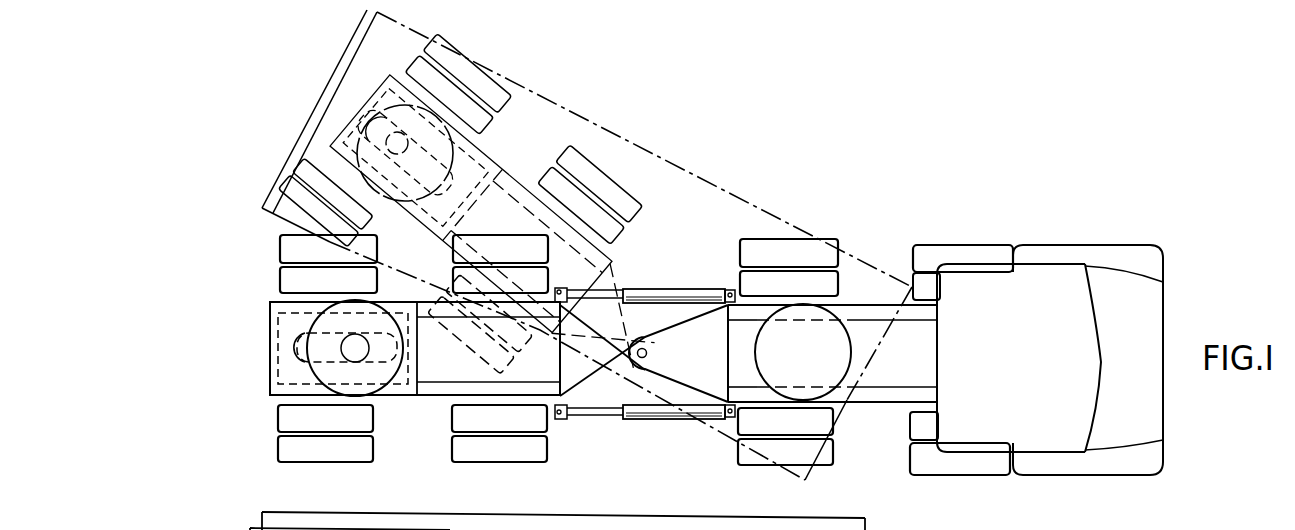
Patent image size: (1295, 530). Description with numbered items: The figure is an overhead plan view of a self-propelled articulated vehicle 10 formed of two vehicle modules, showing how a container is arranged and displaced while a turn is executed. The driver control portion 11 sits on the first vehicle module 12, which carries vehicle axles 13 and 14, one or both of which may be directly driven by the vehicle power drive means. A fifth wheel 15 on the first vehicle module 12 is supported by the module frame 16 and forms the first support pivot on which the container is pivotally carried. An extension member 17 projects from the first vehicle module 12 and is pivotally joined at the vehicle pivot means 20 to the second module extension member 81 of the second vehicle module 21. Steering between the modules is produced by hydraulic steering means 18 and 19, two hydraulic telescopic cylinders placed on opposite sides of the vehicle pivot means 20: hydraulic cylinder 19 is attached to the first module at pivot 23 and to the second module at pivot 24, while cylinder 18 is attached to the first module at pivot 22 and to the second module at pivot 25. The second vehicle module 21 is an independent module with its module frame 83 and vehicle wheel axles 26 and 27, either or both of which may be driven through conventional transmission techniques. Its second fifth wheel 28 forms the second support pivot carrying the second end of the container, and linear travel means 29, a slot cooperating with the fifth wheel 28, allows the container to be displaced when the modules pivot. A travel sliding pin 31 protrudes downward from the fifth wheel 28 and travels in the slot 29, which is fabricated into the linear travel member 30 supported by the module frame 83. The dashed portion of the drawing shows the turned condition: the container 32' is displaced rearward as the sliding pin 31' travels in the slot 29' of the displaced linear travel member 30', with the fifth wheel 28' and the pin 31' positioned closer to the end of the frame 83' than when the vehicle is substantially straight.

The self-propelled articulated vehicle 10 is at (1045, 476).
The driver control portion 11 is at (1150, 458).
The first vehicle module 12 is at (873, 304).
The vehicle axle 13 is at (977, 475).
The vehicle axle 14 is at (783, 452).
The fifth wheel 15 is at (838, 372).
The module frame 16 is at (893, 404).
The extension member 17 is at (686, 419).
The hydraulic steering means 18 is at (567, 417).
The hydraulic steering means 19 is at (667, 289).
The vehicle pivot means 20 is at (650, 353).
The second vehicle module 21 is at (432, 398).
The pivot 22 is at (746, 404).
The pivot 23 is at (728, 292).
The pivot 24 is at (563, 287).
The pivot 25 is at (560, 419).
The vehicle wheel axle 26 is at (502, 448).
The vehicle wheel axle 27 is at (317, 445).
The second fifth wheel 28 is at (356, 378).
The linear travel means 29 is at (291, 345).
The linear travel member 30 is at (484, 349).
The travel sliding pin 31 is at (294, 382).
The second module extension member 81 is at (594, 392).
The module frame 83 is at (455, 453).
The fifth wheel 28' is at (338, 159).
The slot 29' is at (285, 130).
The linear travel member 30' is at (535, 115).
The sliding pin 31' is at (331, 113).
The container 32' is at (587, 245).
The module frame 83' is at (333, 53).